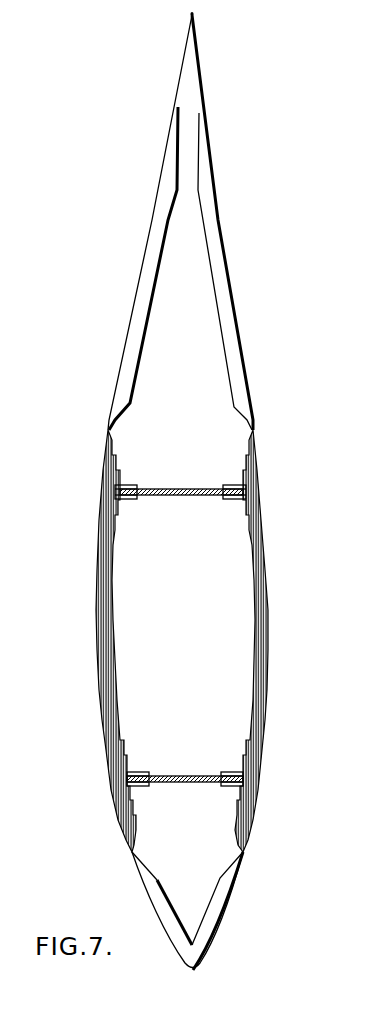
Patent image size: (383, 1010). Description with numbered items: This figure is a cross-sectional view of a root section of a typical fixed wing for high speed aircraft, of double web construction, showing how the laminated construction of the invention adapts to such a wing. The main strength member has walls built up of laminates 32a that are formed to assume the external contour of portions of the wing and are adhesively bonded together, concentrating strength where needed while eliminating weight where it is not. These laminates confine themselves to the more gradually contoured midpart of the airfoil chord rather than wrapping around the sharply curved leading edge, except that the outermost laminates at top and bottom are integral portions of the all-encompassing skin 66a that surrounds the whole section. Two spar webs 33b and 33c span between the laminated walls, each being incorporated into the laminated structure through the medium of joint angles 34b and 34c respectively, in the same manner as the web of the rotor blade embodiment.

The laminates 32a is at (100, 613).
The web 33c is at (187, 489).
The joint angles 34c is at (132, 500).
The web 33b is at (188, 783).
The joint angles 34b is at (220, 772).
The skin 66a is at (232, 896).